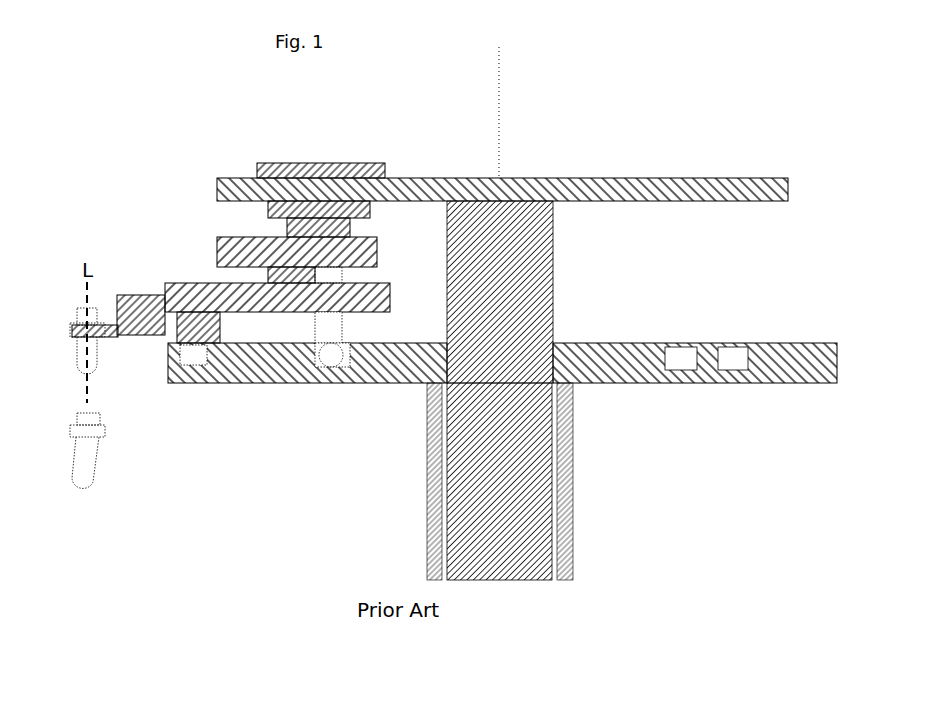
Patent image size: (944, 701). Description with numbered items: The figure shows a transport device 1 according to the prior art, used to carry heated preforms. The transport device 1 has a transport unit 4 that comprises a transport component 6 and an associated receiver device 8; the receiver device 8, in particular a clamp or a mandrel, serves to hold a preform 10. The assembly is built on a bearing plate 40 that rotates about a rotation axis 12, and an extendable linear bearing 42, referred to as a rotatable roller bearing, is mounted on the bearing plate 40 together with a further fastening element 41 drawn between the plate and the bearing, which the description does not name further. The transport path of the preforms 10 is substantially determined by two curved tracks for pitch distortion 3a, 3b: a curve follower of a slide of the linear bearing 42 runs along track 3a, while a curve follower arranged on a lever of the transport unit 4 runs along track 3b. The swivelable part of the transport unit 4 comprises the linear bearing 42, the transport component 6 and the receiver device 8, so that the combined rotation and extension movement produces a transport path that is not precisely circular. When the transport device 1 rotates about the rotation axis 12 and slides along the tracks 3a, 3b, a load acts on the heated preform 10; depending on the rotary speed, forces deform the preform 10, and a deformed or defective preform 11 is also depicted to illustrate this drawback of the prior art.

The transport device 1 is at (142, 146).
The transport unit 4 is at (140, 260).
The transport component 6 is at (147, 325).
The receiver device 8 is at (73, 327).
The preform 10 is at (83, 365).
The deformed preform 11 is at (83, 452).
The rotation axis 12 is at (498, 70).
The bearing plate 40 is at (681, 188).
The fastener 41 is at (337, 229).
The linear bearing 42 is at (201, 289).
The curved track 3a is at (200, 360).
The curved track 3b is at (332, 362).